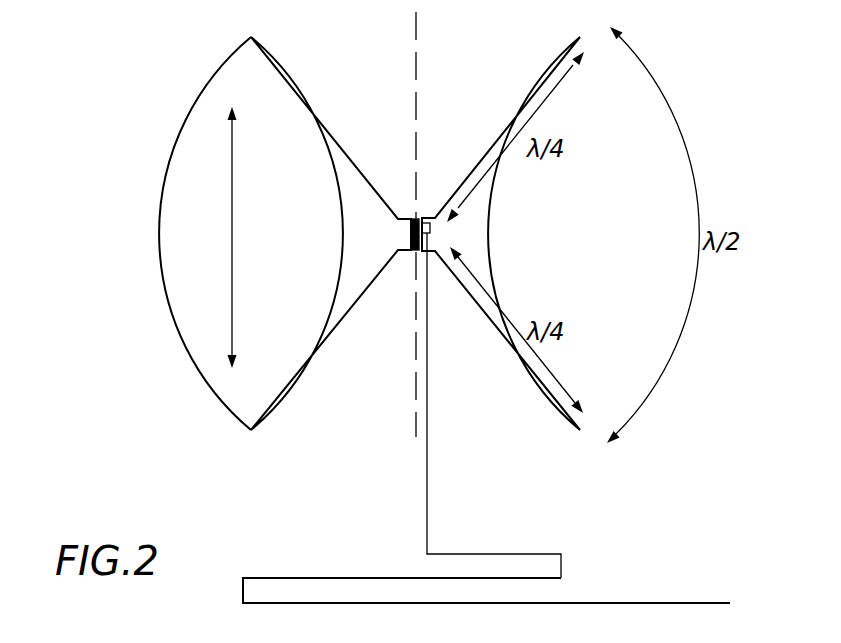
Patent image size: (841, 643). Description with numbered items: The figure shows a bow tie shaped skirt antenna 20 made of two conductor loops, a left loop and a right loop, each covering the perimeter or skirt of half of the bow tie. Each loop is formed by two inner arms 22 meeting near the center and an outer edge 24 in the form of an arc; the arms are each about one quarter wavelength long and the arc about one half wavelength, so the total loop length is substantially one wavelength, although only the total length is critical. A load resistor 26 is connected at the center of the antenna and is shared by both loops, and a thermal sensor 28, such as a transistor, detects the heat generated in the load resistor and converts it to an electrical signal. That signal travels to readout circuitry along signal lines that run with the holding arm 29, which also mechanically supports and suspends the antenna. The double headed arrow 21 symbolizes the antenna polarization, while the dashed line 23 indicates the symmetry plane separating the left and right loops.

The bow tie shaped skirt antenna 20 is at (105, 388).
The double headed arrow 21 is at (232, 215).
The arm 22 is at (290, 82).
The dashed line 23 is at (416, 68).
The outer edge 24 is at (183, 128).
The load resistor 26 is at (411, 234).
The thermal sensor 28 is at (431, 228).
The holding arm 29 is at (427, 345).